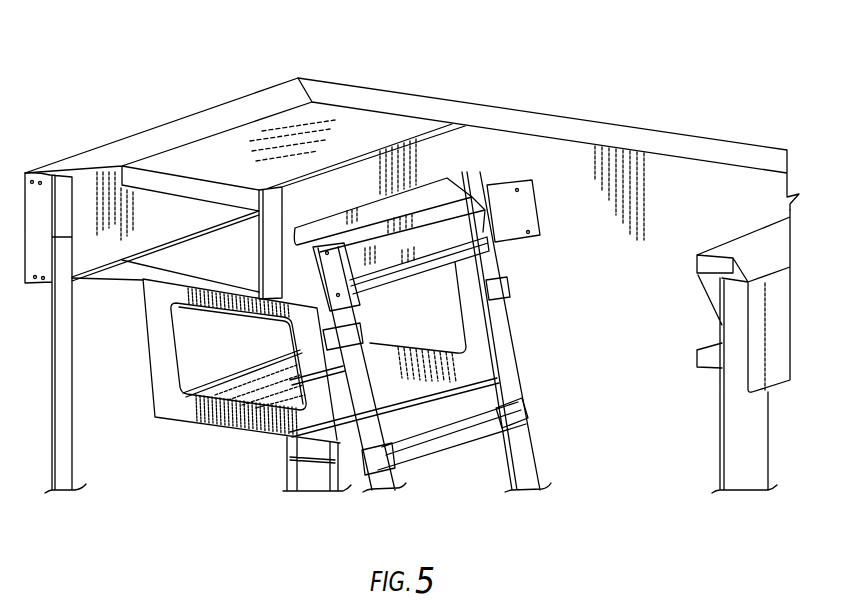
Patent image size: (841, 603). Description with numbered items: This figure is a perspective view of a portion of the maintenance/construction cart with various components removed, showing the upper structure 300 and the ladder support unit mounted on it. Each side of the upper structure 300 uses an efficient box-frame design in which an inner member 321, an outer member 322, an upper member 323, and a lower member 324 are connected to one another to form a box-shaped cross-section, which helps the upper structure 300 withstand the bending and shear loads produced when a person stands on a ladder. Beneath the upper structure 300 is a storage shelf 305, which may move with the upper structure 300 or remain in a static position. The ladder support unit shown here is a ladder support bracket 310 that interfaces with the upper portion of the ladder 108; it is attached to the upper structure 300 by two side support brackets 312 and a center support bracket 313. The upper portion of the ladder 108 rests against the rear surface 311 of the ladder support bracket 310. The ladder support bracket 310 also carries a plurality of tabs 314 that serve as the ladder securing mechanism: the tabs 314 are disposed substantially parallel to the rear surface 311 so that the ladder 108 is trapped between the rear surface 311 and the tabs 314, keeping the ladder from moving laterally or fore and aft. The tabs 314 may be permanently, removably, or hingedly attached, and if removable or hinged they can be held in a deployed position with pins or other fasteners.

The upper structure 300 is at (187, 128).
The inner member 321 is at (663, 160).
The upper member 323 is at (710, 150).
The lower member 324 is at (97, 270).
The storage shelf 305 is at (195, 425).
The center support bracket 313 is at (430, 195).
The side support bracket 312 is at (530, 207).
The rear surface 311 is at (407, 245).
The ladder support bracket 310 is at (410, 290).
The ladder 108 is at (520, 450).
The ladder securing mechanism (tabs) 314 is at (340, 340).
The outer member 322 is at (780, 330).